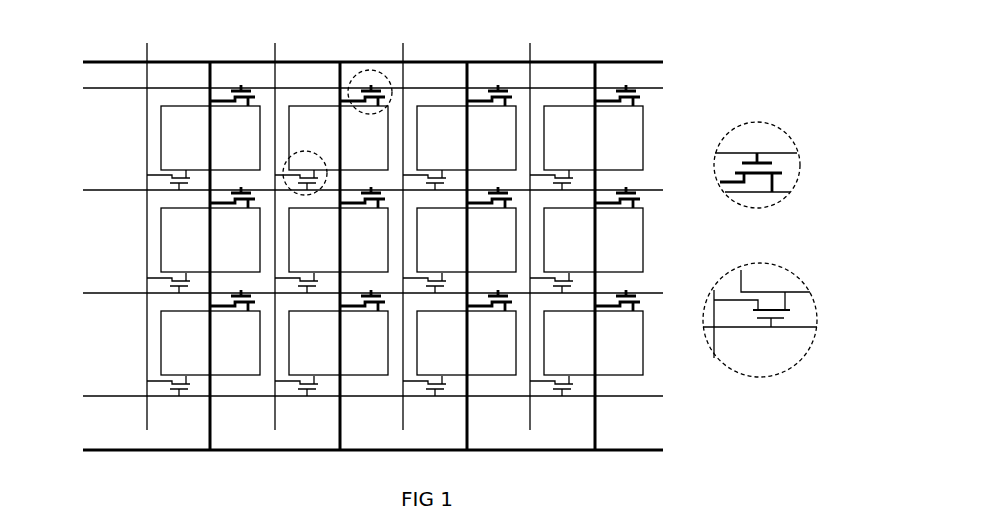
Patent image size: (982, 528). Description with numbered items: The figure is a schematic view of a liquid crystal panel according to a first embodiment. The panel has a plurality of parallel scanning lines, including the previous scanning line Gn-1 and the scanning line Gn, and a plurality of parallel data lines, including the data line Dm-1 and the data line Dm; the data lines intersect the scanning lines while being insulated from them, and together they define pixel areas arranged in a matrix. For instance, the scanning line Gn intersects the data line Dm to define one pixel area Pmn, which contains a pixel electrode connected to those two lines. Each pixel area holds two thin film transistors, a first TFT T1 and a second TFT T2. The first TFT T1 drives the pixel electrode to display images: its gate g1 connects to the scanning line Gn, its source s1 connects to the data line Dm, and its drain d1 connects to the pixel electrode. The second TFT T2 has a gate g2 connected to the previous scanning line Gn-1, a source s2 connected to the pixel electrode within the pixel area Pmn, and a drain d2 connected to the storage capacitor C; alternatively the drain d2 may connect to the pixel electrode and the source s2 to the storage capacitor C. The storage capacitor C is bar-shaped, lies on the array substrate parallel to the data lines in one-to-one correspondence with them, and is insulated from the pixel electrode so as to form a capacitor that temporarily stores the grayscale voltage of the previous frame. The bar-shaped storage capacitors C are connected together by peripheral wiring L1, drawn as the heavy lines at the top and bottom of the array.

The peripheral wiring L1 is at (97, 62).
The storage capacitor C is at (401, 244).
The data line Dm-1 is at (148, 221).
The data line Dm is at (272, 221).
The scanning line Gn-1 is at (349, 91).
The scanning line Gn is at (349, 193).
The first TFT T1 is at (344, 177).
The second TFT T2 is at (383, 60).
The pixel area Pmn is at (306, 163).
The gate of the first TFT g1 is at (810, 320).
The source of the first TFT s1 is at (740, 310).
The drain of the first TFT d1 is at (805, 269).
The gate of the second TFT g2 is at (758, 141).
The source of the second TFT s2 is at (799, 207).
The drain of the second TFT d2 is at (705, 189).